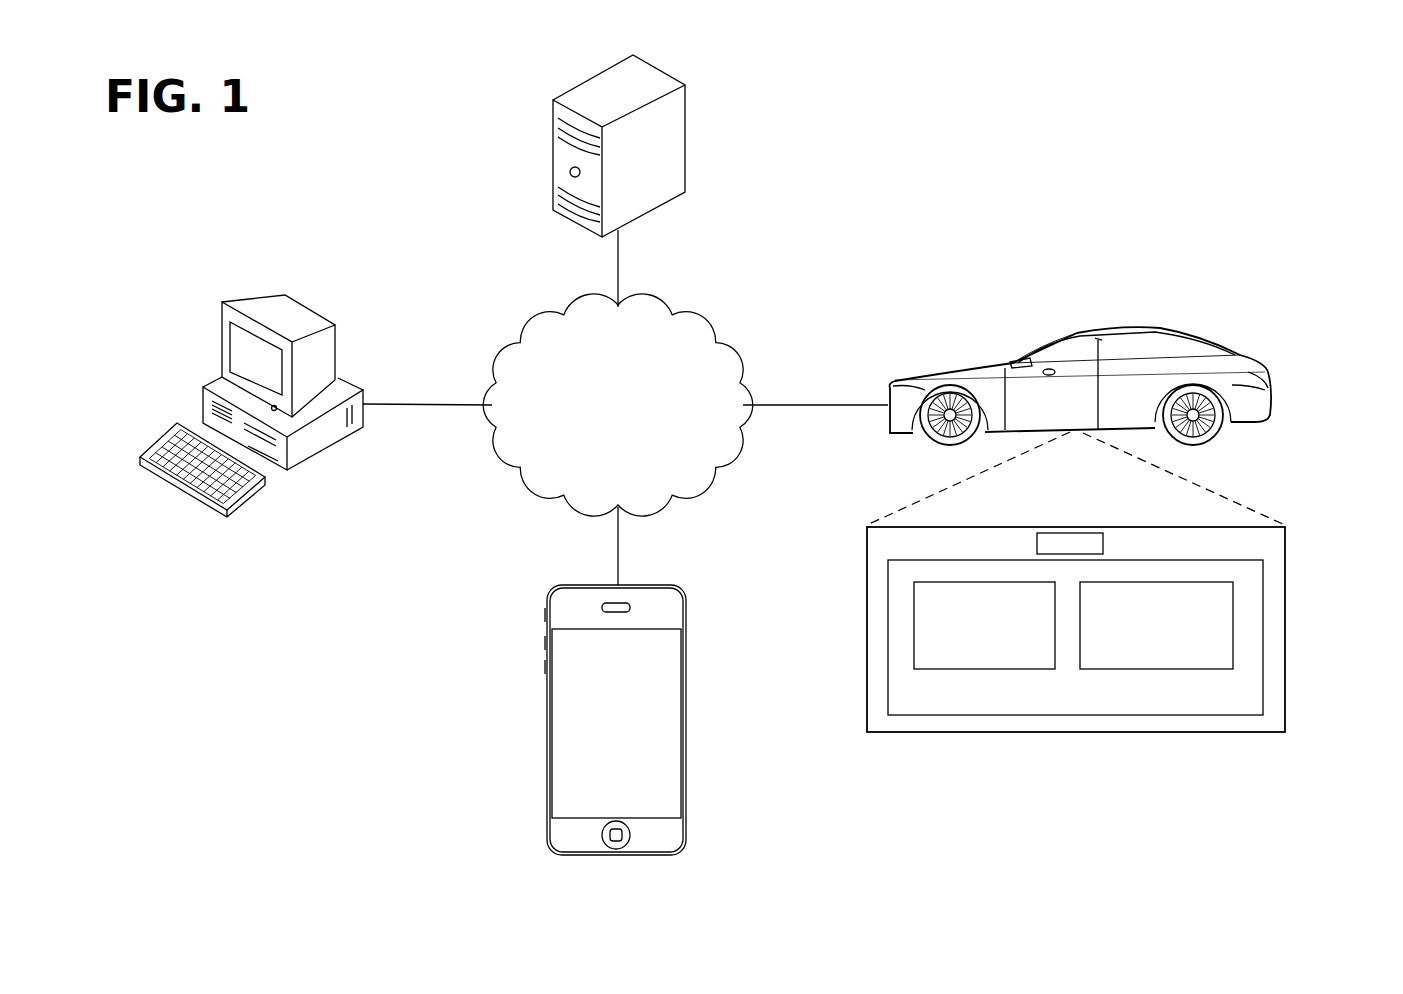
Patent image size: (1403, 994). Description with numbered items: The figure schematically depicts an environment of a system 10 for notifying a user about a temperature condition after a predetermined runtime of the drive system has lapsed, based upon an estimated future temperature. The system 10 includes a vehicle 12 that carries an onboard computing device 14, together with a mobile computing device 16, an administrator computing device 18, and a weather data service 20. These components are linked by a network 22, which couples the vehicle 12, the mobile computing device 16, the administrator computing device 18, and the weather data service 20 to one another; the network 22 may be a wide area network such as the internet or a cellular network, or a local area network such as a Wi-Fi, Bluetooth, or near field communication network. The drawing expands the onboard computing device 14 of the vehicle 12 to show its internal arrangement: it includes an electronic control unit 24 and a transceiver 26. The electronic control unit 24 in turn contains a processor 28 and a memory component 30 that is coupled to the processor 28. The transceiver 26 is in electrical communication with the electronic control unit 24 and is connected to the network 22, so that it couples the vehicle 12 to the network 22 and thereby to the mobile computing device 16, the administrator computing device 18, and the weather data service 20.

The system 10 is at (828, 225).
The vehicle 12 is at (1225, 328).
The onboard computing device 14 is at (1285, 547).
The mobile computing device 16 is at (687, 700).
The administrator computing device 18 is at (335, 342).
The weather data service 20 is at (685, 142).
The network 22 is at (737, 363).
The electronic control unit 24 is at (1265, 643).
The transceiver 26 is at (1080, 532).
The processor 28 is at (958, 670).
The memory component 30 is at (1157, 670).